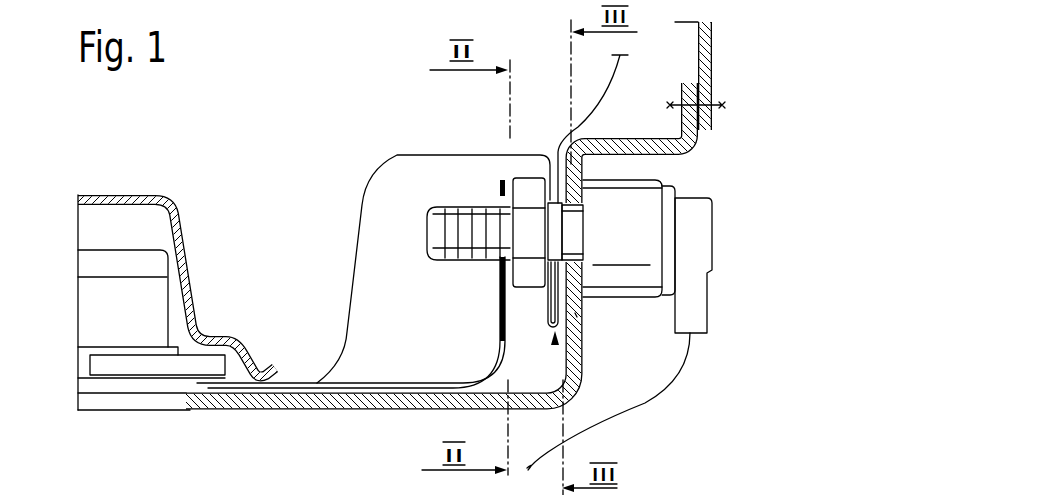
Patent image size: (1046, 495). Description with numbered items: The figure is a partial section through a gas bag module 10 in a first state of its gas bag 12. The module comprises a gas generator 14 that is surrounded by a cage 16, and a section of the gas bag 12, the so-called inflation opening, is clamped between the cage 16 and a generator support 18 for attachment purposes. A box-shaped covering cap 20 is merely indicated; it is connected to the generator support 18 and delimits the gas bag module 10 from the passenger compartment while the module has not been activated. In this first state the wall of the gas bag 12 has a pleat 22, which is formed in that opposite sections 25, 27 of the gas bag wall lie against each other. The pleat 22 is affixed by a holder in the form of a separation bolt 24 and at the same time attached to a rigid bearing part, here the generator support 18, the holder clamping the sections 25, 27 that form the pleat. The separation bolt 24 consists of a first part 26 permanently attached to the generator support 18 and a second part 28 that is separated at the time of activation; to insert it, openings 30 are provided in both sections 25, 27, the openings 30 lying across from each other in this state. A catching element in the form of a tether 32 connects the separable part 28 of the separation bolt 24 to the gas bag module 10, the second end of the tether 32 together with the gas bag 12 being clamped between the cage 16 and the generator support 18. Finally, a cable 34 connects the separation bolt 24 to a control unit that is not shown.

The gas bag module 10 is at (275, 215).
The gas bag 12 is at (382, 168).
The gas generator 14 is at (100, 304).
The cage 16 is at (119, 195).
The generator support 18 is at (302, 408).
The covering cap 20 is at (713, 47).
The pleat 22 is at (575, 345).
The separation bolt 24 is at (485, 188).
The section of the gas bag wall 25 is at (553, 343).
The first part of the separation bolt 26 is at (647, 237).
The section of the gas bag wall 27 is at (575, 313).
The second part of the separation bolt 28 is at (432, 243).
The openings 30 is at (565, 197).
The tether 32 is at (495, 338).
The cable 34 is at (632, 407).